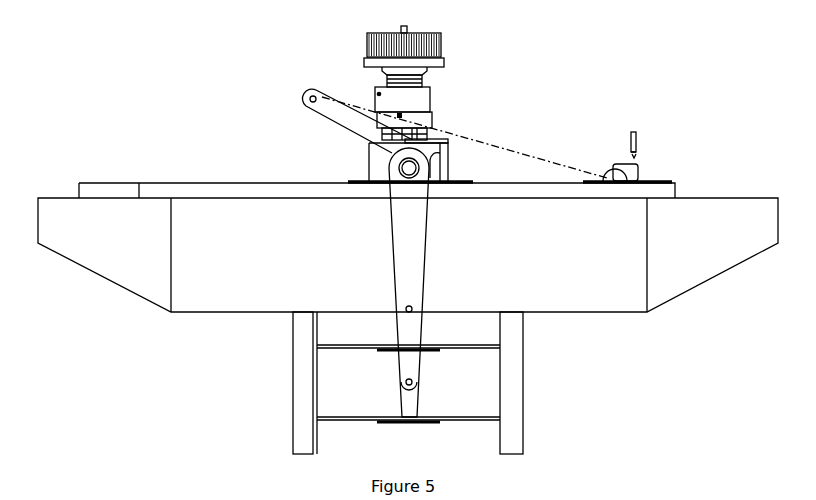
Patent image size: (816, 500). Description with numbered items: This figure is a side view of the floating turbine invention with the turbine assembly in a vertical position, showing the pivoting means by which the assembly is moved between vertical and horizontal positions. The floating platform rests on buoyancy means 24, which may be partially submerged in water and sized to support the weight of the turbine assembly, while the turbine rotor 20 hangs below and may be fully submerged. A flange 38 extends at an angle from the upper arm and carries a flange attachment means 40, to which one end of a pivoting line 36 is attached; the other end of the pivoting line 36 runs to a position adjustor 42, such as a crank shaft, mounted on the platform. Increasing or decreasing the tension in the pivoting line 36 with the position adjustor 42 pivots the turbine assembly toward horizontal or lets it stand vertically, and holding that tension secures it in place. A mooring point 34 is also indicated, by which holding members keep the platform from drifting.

The turbine rotor 20 is at (523, 428).
The buoyancy means 24 is at (680, 297).
The mooring point 34 is at (409, 382).
The pivoting line 36 is at (502, 149).
The flange 38 is at (330, 121).
The flange attachment means 40 is at (311, 95).
The position adjustor 42 is at (646, 165).